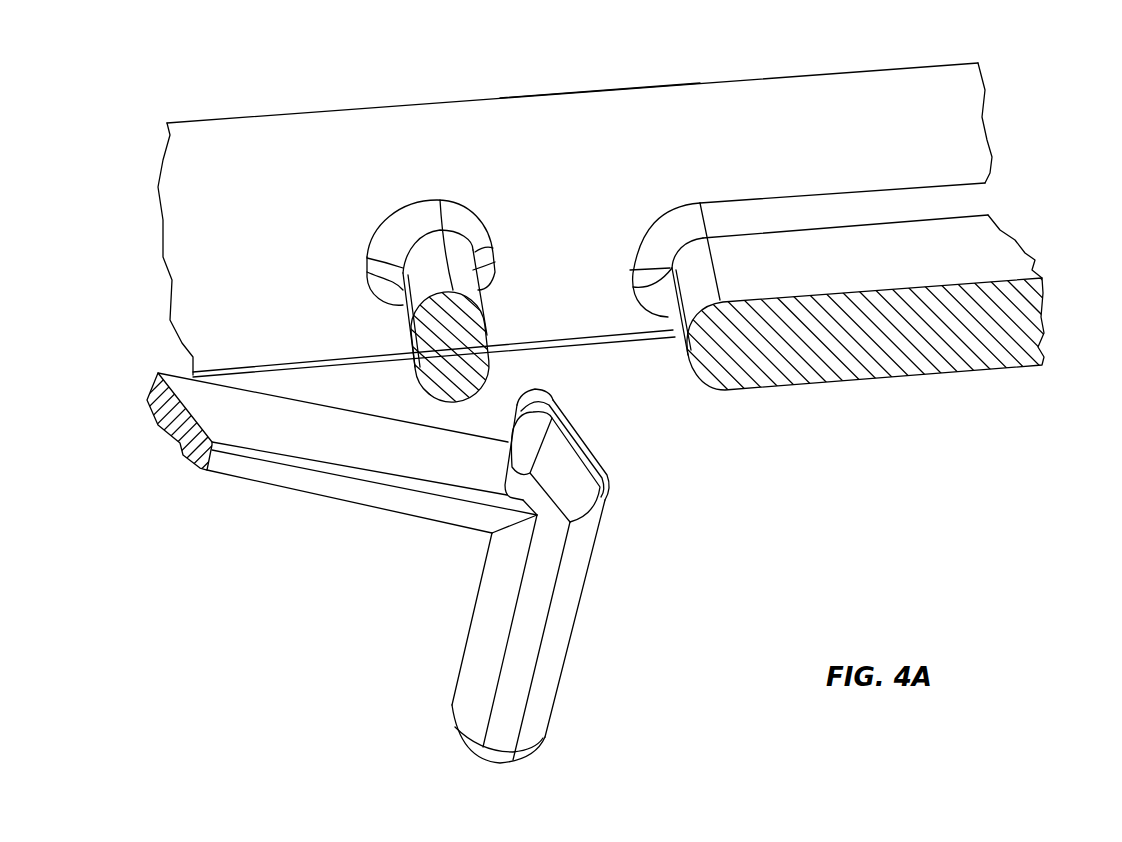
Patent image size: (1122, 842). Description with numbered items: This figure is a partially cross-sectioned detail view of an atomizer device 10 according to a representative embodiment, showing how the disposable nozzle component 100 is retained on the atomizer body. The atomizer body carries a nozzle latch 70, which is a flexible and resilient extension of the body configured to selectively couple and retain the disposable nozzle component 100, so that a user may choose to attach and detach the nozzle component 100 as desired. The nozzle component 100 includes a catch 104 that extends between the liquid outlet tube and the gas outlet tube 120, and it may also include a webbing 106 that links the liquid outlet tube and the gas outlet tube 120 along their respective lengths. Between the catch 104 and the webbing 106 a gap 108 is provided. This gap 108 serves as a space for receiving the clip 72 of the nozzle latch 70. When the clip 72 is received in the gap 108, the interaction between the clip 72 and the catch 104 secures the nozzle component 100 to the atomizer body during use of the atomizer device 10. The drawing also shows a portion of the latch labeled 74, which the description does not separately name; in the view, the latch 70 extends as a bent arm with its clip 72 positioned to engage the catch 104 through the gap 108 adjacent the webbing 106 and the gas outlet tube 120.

The atomizer device 10 is at (905, 515).
The nozzle latch 70 is at (328, 487).
The clip 72 is at (553, 398).
The tool leg 74 is at (545, 708).
The disposable nozzle component 100 is at (965, 101).
The catch 104 is at (423, 272).
The webbing 106 is at (834, 372).
The gap 108 is at (611, 202).
The gas outlet tube 120 is at (553, 88).